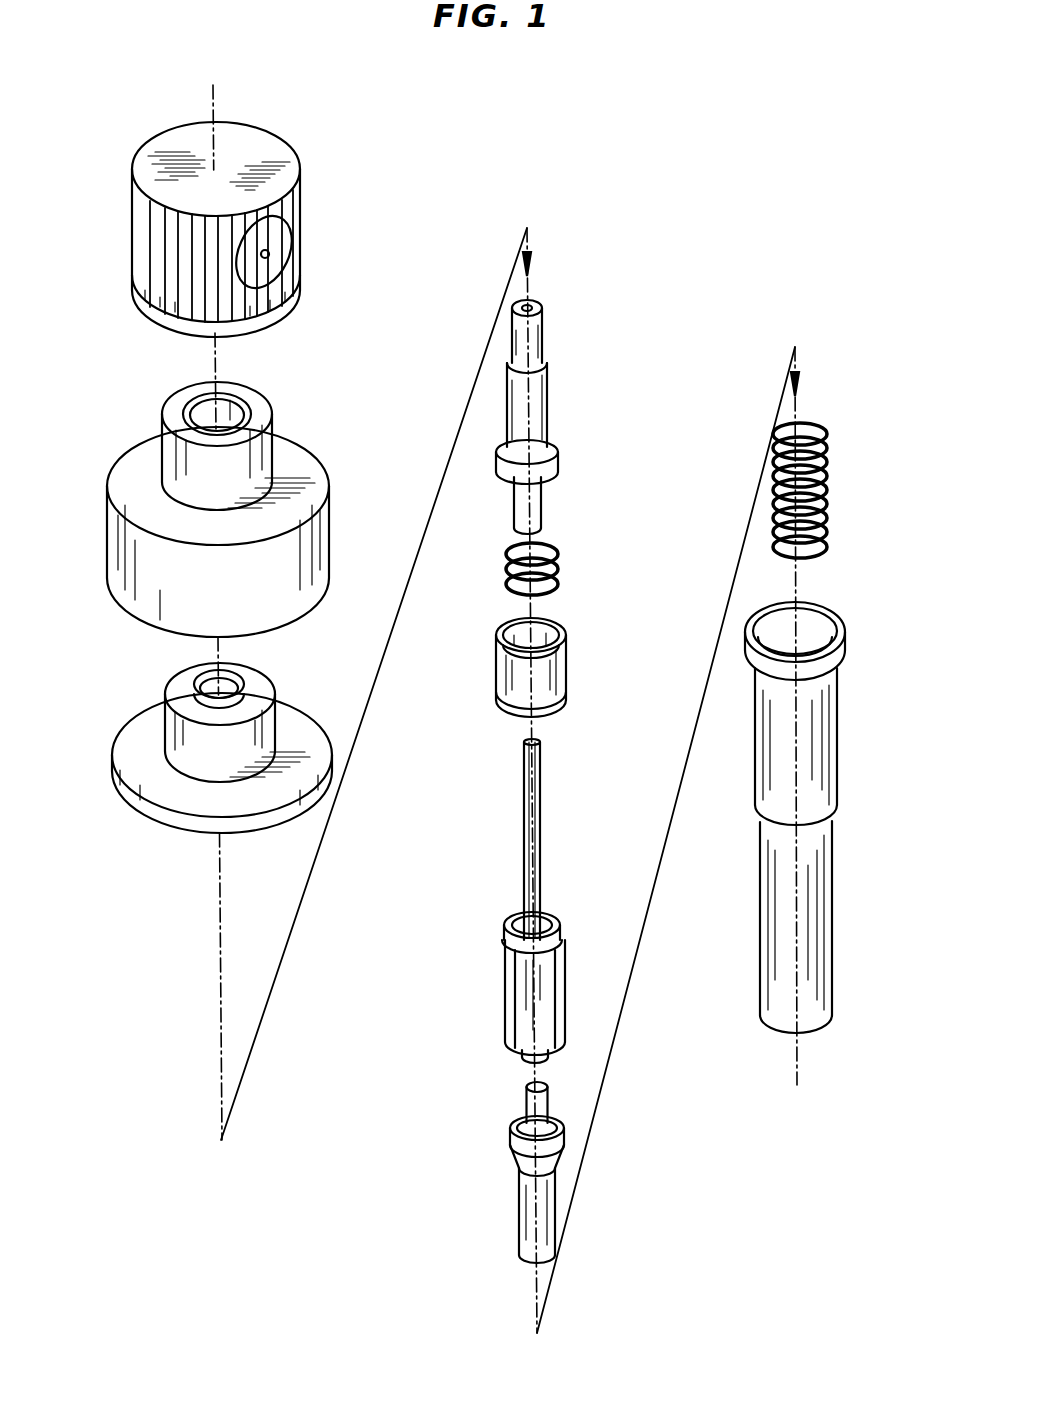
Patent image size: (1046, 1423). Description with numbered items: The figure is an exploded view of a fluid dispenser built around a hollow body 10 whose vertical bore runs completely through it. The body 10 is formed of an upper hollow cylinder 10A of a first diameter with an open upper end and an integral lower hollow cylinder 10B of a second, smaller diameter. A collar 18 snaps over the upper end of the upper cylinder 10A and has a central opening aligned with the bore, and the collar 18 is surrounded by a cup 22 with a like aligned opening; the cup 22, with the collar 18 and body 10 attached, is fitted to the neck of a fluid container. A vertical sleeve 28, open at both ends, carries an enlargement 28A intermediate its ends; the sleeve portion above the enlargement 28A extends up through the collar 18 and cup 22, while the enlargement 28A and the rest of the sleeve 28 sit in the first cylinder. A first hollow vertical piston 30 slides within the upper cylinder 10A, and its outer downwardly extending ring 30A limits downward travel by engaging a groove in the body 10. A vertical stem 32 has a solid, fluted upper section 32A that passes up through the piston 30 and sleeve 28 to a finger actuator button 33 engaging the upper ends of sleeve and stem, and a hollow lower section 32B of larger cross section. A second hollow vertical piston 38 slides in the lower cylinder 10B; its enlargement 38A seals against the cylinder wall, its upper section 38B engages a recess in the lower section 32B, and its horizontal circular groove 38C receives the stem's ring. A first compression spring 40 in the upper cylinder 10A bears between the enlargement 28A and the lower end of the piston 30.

The hollow body 10 is at (825, 817).
The upper hollow cylinder 10A is at (830, 722).
The lower hollow cylinder 10B is at (826, 928).
The collar 18 is at (133, 730).
The cup 22 is at (118, 535).
The vertical sleeve 28 is at (575, 417).
The enlargement 28A is at (560, 466).
The first hollow vertical piston 30 is at (577, 667).
The outer downwardly extending ring 30A is at (566, 708).
The vertical stem 32 is at (527, 901).
The solid upper vertical section 32A is at (543, 813).
The hollow lower vertical section 32B is at (507, 1023).
The finger actuator button 33 is at (290, 267).
The second hollow vertical piston 38 is at (485, 1173).
The enlargement 38A is at (520, 1172).
The upper section 38B is at (523, 1100).
The horizontal circular groove 38C is at (510, 1128).
The first compression spring 40 is at (558, 580).